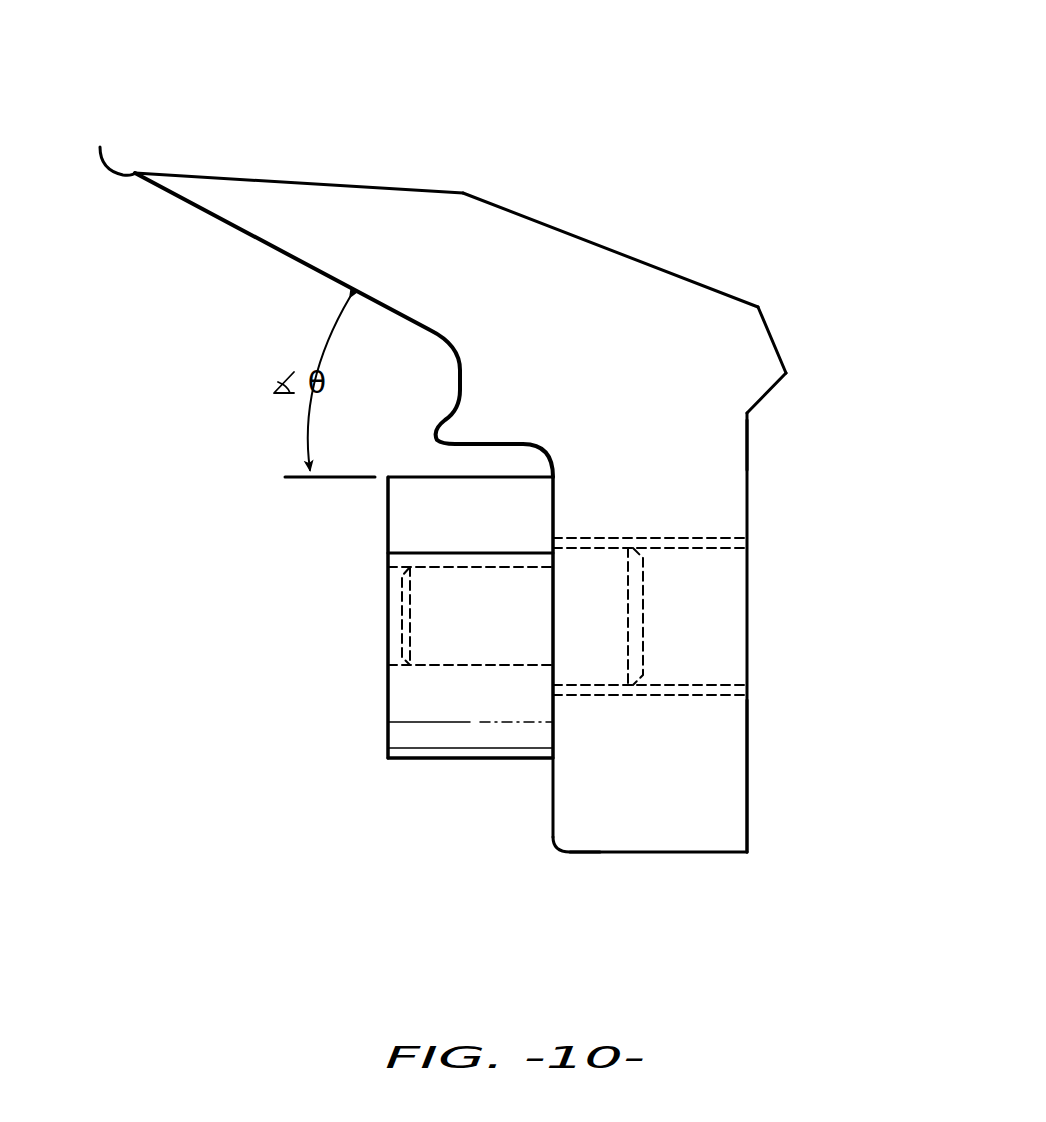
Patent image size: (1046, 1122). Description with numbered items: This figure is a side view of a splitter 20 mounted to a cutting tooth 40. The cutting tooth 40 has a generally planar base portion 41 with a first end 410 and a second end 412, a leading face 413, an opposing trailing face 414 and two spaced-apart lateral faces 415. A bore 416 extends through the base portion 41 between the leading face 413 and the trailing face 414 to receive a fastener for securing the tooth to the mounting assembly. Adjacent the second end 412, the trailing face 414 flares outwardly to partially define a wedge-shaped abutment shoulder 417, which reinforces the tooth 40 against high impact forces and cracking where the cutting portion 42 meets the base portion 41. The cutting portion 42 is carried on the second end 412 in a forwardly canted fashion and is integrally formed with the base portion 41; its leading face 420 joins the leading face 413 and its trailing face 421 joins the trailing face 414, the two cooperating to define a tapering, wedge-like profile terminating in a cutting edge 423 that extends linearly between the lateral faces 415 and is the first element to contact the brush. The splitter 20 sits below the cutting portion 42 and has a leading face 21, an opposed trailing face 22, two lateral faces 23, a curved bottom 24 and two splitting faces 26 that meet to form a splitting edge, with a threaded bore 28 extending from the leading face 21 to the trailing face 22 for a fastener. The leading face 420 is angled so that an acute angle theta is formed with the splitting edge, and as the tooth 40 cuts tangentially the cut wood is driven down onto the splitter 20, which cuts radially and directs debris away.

The splitter 20 is at (362, 530).
The leading face 21 is at (388, 695).
The trailing face 22 is at (550, 723).
The lateral faces 23 is at (451, 710).
The curved bottom 24 is at (440, 760).
The splitting faces 26 is at (448, 532).
The threaded bore 28 is at (442, 612).
The cutting tooth 40 is at (826, 265).
The base portion 41 is at (843, 415).
The cutting portion 42 is at (170, 82).
The first end 410 is at (655, 852).
The second end 412 is at (657, 440).
The leading face 413 is at (551, 818).
The trailing face 414 is at (747, 792).
The lateral faces 415 is at (583, 386).
The bore 416 is at (702, 540).
The abutment shoulder 417 is at (790, 378).
The leading face 420 is at (287, 257).
The trailing face 421 is at (277, 180).
The cutting edge 423 is at (103, 143).